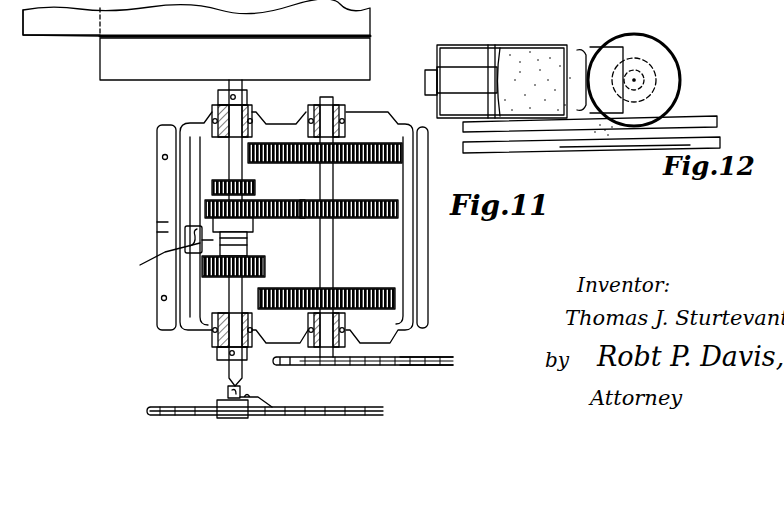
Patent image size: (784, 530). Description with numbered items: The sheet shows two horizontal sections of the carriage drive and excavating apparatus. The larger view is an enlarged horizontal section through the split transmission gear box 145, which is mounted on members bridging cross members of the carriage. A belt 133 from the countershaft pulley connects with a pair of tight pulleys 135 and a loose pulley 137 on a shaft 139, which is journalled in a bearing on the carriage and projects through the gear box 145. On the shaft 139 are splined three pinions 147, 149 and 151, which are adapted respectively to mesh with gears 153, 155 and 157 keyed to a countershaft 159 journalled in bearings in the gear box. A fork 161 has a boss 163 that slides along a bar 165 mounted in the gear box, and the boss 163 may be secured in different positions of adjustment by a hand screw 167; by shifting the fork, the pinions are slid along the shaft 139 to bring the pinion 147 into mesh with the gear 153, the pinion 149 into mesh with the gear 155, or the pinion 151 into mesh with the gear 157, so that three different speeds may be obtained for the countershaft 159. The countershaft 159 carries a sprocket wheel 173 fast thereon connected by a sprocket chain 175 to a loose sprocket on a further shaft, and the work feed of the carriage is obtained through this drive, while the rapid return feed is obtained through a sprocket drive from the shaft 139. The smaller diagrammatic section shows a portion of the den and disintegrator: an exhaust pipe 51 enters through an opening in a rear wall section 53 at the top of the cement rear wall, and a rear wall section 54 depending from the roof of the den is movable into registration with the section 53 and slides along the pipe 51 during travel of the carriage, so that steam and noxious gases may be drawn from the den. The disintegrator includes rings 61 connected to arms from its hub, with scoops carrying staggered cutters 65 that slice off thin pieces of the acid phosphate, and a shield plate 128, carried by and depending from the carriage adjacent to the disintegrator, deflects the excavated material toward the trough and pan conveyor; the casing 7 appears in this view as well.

In FIG. 11, the belt 133 is at (66, 29).
In FIG. 11, the tight pulleys 135 is at (370, 53).
In FIG. 11, the loose pulley 137 is at (370, 22).
In FIG. 11, the shaft 139 is at (232, 117).
In FIG. 11, the split transmission gear box 145 is at (276, 122).
In FIG. 11, the pinion 147 is at (212, 187).
In FIG. 11, the pinion 149 is at (205, 210).
In FIG. 11, the pinion 151 is at (266, 265).
In FIG. 11, the gear 153 is at (371, 144).
In FIG. 11, the gear 155 is at (368, 196).
In FIG. 11, the gear 157 is at (372, 282).
In FIG. 11, the countershaft 159 is at (334, 243).
In FIG. 11, the fork 161 is at (250, 240).
In FIG. 11, the boss 163 is at (190, 238).
In FIG. 11, the bar 165 is at (190, 150).
In FIG. 11, the hand screw 167 is at (156, 260).
In FIG. 11, the sprocket wheel 173 is at (300, 366).
In FIG. 11, the sprocket chain 175 is at (393, 365).
In FIG. 12, the casing 7 is at (499, 52).
In FIG. 12, the pipe 51 is at (471, 68).
In FIG. 12, the rear wall section 53 is at (493, 50).
In FIG. 12, the rear wall section 54 is at (469, 70).
In FIG. 12, the rings 61 is at (641, 50).
In FIG. 12, the cutters 65 is at (584, 48).
In FIG. 12, the shield plate 128 is at (609, 146).